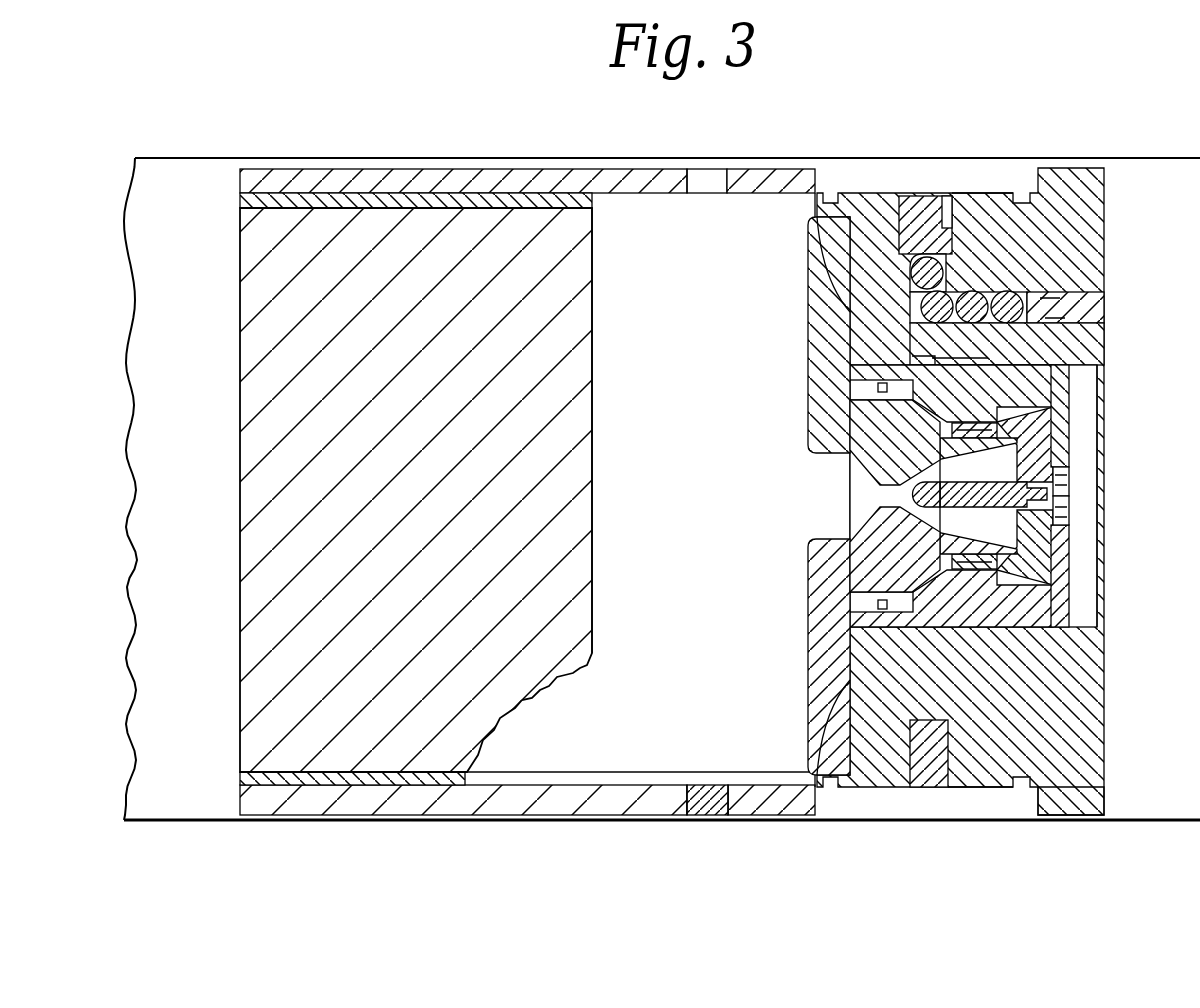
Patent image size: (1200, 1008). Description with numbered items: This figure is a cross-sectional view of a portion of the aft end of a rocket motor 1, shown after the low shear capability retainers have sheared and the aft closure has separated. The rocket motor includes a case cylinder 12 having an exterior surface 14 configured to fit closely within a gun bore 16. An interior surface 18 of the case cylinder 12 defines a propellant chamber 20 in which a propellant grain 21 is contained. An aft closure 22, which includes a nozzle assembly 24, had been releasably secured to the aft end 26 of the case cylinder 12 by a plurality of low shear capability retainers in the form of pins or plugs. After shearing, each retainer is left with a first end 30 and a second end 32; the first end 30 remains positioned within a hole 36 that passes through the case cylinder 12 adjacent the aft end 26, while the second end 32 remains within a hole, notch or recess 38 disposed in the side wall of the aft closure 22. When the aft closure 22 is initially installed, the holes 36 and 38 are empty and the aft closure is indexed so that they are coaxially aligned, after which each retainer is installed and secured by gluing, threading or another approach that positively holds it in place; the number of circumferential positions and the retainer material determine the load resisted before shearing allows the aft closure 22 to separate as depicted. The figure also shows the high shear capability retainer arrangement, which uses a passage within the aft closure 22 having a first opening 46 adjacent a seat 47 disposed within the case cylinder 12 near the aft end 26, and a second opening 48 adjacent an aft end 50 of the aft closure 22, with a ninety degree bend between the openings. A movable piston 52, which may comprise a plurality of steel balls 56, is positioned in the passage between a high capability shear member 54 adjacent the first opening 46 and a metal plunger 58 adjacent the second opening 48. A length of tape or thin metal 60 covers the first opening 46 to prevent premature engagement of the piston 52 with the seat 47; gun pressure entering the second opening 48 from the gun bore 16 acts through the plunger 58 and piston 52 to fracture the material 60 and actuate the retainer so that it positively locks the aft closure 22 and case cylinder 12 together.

The projectile launching device 1 is at (360, 130).
The case cylinder 12 is at (512, 169).
The exterior surface 14 is at (602, 193).
The gun bore 16 is at (1150, 160).
The interior surface 18 is at (641, 195).
The propellant chamber 20 is at (548, 785).
The propellant grain 21 is at (387, 482).
The aft closure 22 is at (1105, 767).
The nozzle assembly 24 is at (1075, 416).
The aft end 26 is at (781, 178).
The first end 30 is at (711, 785).
The second end 32 is at (952, 787).
The hole 36 is at (706, 815).
The hole, notch or recess 38 is at (920, 787).
The first opening 46 is at (975, 193).
The seat 47 is at (748, 180).
The second opening 48 is at (1104, 340).
The aft end 50 is at (1105, 203).
The movable piston 52 is at (915, 318).
The high capability shear member 54 is at (912, 196).
The steel balls 56 is at (918, 315).
The metal plunger 58 is at (1104, 309).
The tape or thin metal 60 is at (947, 196).